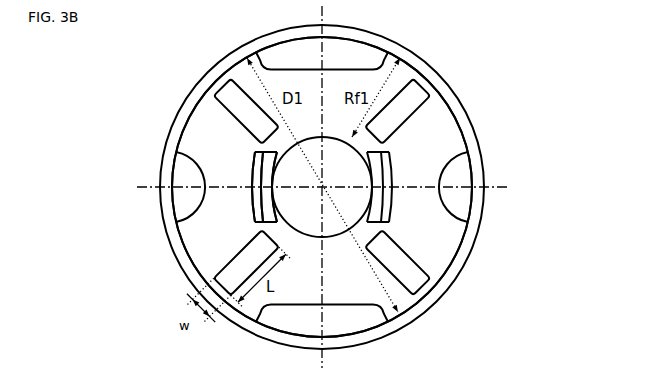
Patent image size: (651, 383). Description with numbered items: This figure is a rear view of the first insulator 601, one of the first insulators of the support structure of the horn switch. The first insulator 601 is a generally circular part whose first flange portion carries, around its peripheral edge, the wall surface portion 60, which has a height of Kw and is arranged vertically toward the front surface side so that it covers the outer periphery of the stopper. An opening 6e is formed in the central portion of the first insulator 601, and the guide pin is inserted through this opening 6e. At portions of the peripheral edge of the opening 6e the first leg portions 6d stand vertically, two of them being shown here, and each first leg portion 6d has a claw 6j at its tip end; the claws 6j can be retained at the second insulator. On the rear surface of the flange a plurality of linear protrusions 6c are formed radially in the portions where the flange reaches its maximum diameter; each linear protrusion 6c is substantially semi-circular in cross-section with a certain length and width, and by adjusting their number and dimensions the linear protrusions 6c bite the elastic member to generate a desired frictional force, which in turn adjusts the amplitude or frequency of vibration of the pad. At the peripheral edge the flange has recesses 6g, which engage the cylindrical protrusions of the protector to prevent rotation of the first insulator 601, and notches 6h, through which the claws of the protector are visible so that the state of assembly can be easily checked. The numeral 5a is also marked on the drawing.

The first insulator 601 is at (170, 76).
The wall surface portion 60 is at (459, 98).
The rotor core 5a is at (443, 248).
The linear protrusions 6c is at (407, 112).
The first leg portions 6d is at (380, 193).
The opening 6e is at (351, 138).
The recesses 6g is at (449, 166).
The notches 6h is at (297, 69).
The claws 6j is at (257, 200).